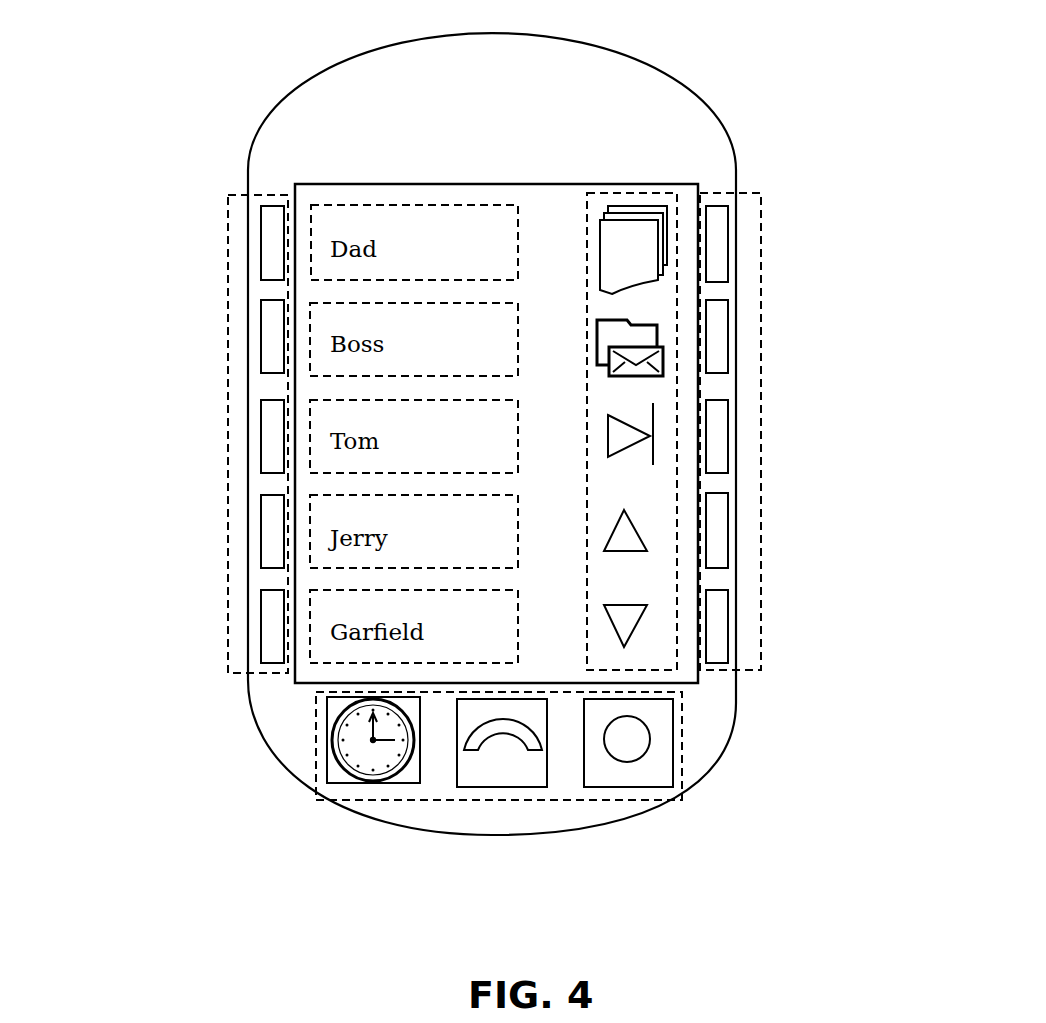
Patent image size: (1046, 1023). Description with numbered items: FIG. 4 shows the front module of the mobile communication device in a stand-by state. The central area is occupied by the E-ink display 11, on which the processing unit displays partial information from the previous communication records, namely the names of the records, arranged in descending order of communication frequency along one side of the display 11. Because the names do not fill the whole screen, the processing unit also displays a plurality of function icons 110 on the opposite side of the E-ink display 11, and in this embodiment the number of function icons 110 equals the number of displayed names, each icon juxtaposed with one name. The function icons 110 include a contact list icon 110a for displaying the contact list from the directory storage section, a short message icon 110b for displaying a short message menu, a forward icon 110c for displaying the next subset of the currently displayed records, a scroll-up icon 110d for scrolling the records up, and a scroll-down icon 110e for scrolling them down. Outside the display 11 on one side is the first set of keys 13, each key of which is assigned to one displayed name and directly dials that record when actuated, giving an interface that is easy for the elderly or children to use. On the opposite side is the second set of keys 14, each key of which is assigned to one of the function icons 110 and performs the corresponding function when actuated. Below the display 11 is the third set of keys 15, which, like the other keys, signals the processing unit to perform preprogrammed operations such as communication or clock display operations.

The display 11 is at (677, 182).
The function icons 110 is at (599, 192).
The contact list icon 110a is at (599, 253).
The short message icon 110b is at (600, 360).
The forward icon 110c is at (608, 438).
The scroll-up icon 110d is at (608, 540).
The scroll-down icon 110e is at (612, 623).
The first set of keys 13 is at (227, 435).
The second set of keys 14 is at (762, 443).
The third set of keys 15 is at (316, 753).